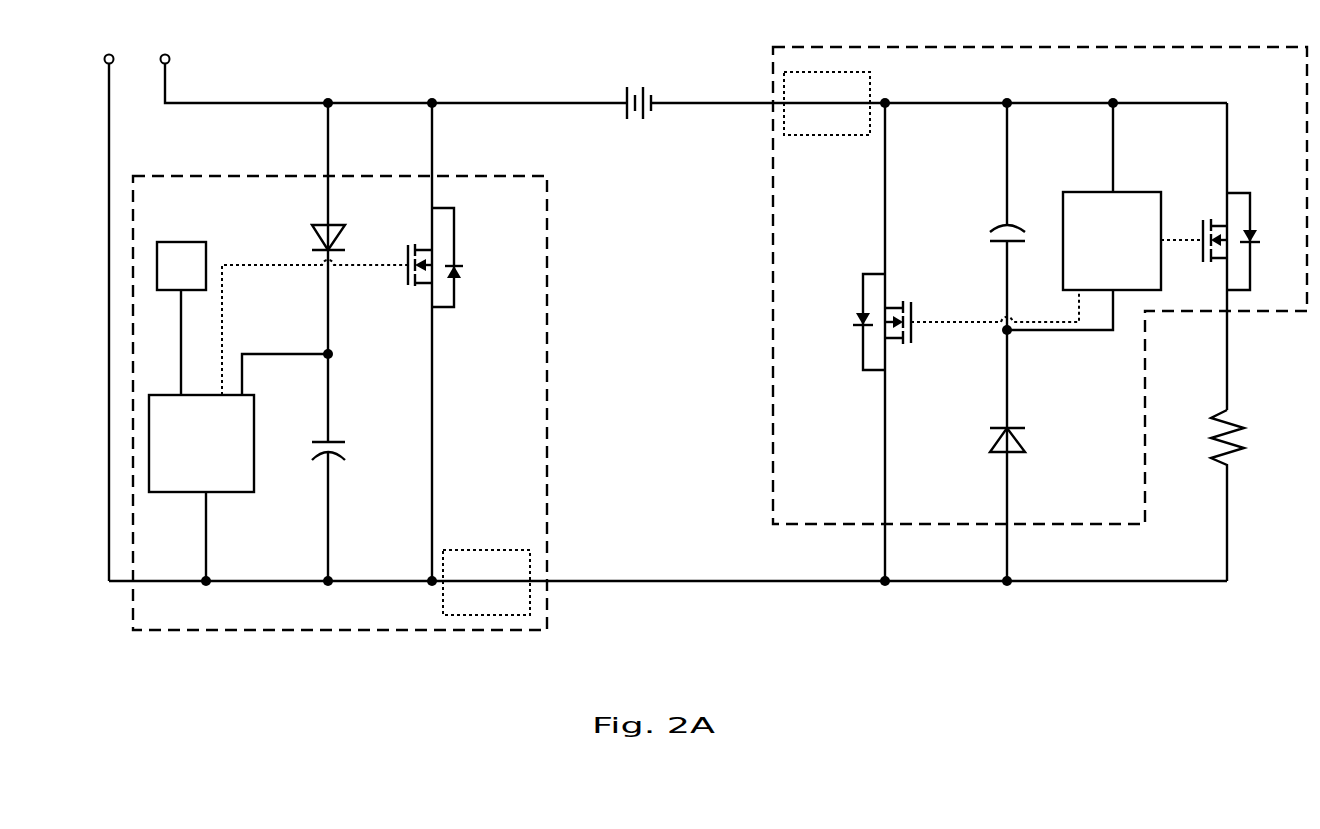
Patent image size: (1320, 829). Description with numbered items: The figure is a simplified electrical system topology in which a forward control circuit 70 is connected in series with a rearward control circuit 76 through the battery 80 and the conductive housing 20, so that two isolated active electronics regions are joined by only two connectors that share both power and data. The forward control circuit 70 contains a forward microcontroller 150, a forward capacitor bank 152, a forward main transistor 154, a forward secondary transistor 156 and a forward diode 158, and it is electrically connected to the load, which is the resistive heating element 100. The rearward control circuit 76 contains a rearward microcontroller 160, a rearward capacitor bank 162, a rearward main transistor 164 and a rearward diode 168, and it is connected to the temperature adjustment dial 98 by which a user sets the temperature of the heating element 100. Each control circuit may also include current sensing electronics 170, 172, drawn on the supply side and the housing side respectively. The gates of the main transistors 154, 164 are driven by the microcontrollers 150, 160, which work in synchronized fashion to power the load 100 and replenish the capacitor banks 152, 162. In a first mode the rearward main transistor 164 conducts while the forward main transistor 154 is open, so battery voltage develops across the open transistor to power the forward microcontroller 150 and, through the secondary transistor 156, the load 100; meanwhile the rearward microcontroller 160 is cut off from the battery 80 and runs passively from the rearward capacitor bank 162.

The conductive housing 20 is at (658, 581).
The forward control circuit 70 is at (773, 231).
The rearward control circuit 76 is at (547, 295).
The battery 80 is at (651, 91).
The temperature adjustment dial 98 is at (192, 276).
The resistive heating element 100 is at (1236, 414).
The forward microcontroller 150 is at (1129, 251).
The forward capacitor bank 152 is at (992, 241).
The forward main transistor 154 is at (878, 331).
The forward secondary transistor 156 is at (1249, 233).
The forward diode 158 is at (1025, 452).
The rearward microcontroller 160 is at (218, 454).
The rearward capacitor bank 162 is at (340, 442).
The rearward main transistor 164 is at (438, 258).
The rearward diode 168 is at (320, 223).
The current sensing electronics 170 is at (837, 99).
The current sensing electronics 172 is at (486, 579).